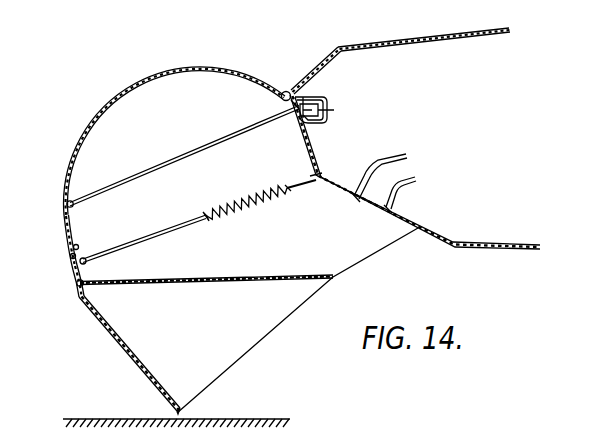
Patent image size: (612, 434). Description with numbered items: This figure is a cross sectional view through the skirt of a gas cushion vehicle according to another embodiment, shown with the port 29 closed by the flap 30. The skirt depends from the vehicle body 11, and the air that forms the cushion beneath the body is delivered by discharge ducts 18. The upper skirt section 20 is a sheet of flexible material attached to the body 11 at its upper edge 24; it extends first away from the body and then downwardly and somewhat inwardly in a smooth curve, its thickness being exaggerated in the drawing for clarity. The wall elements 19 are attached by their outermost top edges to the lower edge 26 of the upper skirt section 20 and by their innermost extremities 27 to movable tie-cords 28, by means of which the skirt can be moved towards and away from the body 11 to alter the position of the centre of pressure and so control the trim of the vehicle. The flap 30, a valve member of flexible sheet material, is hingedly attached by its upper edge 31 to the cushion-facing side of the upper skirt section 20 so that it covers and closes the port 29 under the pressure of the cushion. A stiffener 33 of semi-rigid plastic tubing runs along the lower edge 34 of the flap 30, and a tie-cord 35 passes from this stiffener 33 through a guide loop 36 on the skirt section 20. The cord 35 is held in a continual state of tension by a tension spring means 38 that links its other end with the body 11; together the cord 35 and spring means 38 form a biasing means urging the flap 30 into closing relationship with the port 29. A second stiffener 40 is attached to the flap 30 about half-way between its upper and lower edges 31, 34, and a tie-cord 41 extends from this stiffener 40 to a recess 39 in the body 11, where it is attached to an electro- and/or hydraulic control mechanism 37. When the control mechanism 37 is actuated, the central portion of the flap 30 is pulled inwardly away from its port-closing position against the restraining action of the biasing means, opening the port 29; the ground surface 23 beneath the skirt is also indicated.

The body 11 is at (447, 41).
The discharge ducts 18 is at (399, 162).
The wall elements 19 is at (124, 358).
The upper skirt section 20 is at (204, 68).
The ground surface 23 is at (115, 418).
The upper edge 24 is at (287, 90).
The lower edge 26 is at (76, 283).
The innermost extremities 27 is at (333, 275).
The tie-cords 28 is at (369, 252).
The port 29 is at (67, 231).
The flap 30 is at (73, 186).
The upper edge 31 is at (73, 172).
The stiffener 33 is at (77, 246).
The lower edge 34 is at (71, 257).
The tie-cords 35 is at (166, 232).
The guide loop 36 is at (86, 261).
The control mechanism 37 is at (315, 118).
The tension spring means 38 is at (248, 207).
The recess 39 is at (323, 96).
The second stiffener 40 is at (67, 203).
The tie-cords 41 is at (181, 159).